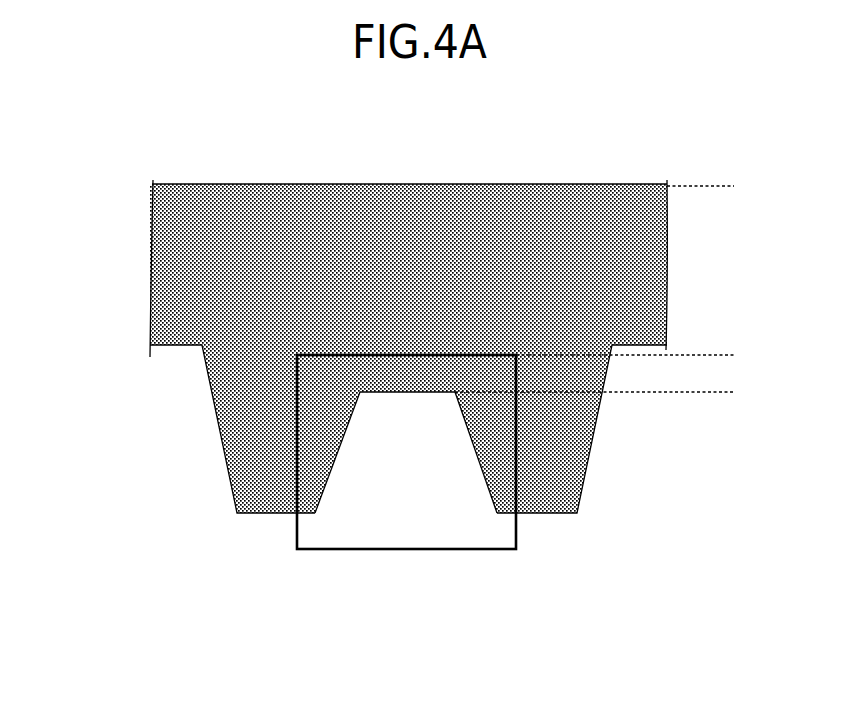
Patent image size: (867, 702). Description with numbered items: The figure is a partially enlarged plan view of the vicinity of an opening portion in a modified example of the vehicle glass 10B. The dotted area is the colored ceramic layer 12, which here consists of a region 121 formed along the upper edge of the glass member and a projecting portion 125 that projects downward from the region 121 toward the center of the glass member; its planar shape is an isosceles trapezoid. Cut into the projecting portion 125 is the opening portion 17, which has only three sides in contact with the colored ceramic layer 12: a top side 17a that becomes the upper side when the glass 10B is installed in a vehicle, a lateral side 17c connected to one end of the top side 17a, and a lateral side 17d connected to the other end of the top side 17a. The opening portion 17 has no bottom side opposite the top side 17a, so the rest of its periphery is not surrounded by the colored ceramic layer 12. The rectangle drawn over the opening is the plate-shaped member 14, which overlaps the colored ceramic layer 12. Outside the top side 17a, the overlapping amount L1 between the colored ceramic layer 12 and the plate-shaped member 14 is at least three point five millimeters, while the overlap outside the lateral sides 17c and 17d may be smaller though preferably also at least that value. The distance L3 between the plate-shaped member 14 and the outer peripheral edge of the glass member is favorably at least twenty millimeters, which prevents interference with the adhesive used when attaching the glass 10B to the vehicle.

The glass 10B is at (108, 126).
The colored ceramic layer 12 is at (380, 375).
The region 121 is at (140, 185).
The projecting portion 125 is at (140, 353).
The opening portion 17 is at (406, 515).
The top side 17a is at (368, 393).
The lateral side 17c is at (330, 473).
The lateral side 17d is at (482, 473).
The plate-shaped member 14 is at (478, 549).
The distance L3 is at (728, 186).
The overlapping amount L1 is at (728, 355).